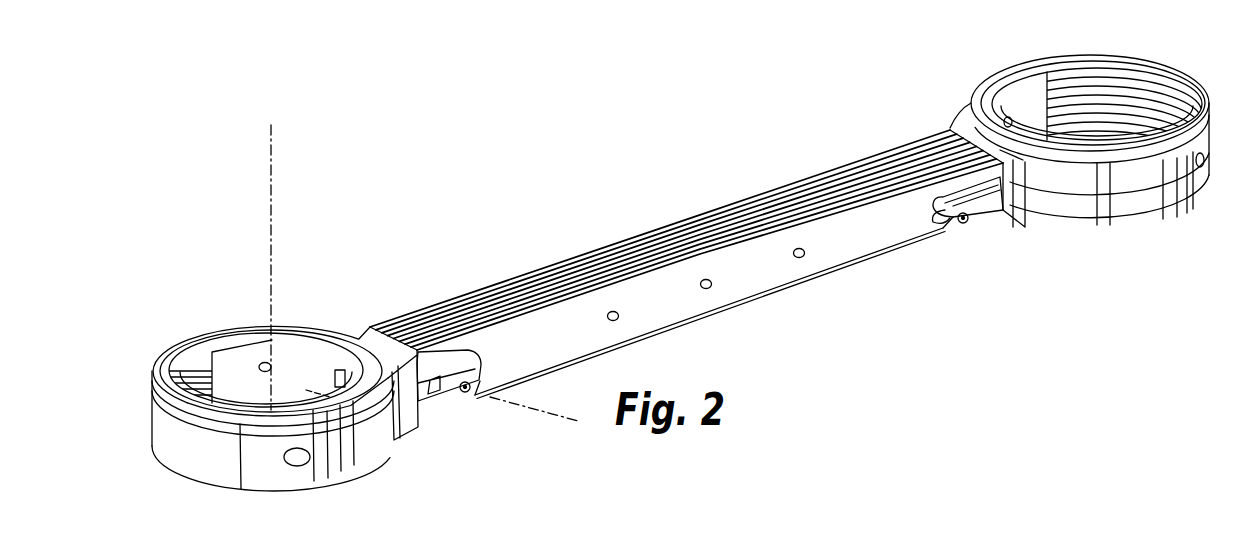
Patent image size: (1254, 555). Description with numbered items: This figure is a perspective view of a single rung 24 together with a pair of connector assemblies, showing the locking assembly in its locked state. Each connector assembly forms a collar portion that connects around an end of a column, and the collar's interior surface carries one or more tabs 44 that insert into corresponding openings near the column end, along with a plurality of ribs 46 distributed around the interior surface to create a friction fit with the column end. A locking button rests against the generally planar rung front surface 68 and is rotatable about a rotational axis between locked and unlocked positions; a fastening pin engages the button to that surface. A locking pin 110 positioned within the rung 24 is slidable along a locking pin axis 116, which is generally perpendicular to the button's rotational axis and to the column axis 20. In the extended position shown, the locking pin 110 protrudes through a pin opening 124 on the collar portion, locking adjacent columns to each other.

The column axis 20 is at (268, 130).
The rung 24 is at (652, 228).
The tabs 44 is at (265, 362).
The ribs 46 is at (1183, 99).
The rung front surface 68 is at (672, 307).
The locking pin 110 is at (274, 345).
The locking pin axis 116 is at (310, 393).
The pin opening 124 is at (340, 371).